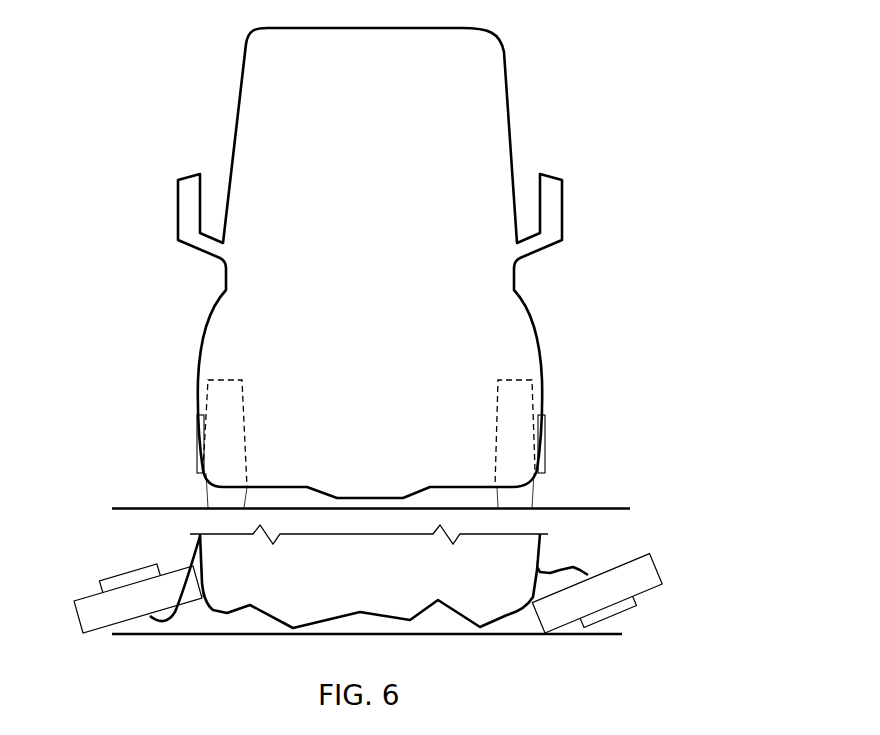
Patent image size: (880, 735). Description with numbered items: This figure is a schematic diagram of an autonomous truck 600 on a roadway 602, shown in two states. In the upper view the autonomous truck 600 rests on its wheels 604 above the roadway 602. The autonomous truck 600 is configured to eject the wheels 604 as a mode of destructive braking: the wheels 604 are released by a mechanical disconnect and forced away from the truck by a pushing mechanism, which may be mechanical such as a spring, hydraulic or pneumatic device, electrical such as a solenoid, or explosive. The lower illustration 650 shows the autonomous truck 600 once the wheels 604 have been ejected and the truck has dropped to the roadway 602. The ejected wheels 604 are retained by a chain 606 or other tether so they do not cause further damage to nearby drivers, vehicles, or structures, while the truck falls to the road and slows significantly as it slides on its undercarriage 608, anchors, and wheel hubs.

The illustration 650 is at (107, 120).
The autonomous truck 600 is at (510, 127).
The roadway 602 is at (153, 508).
The wheels 604 is at (543, 443).
The chain 606 is at (570, 565).
The undercarriage 608 is at (229, 645).